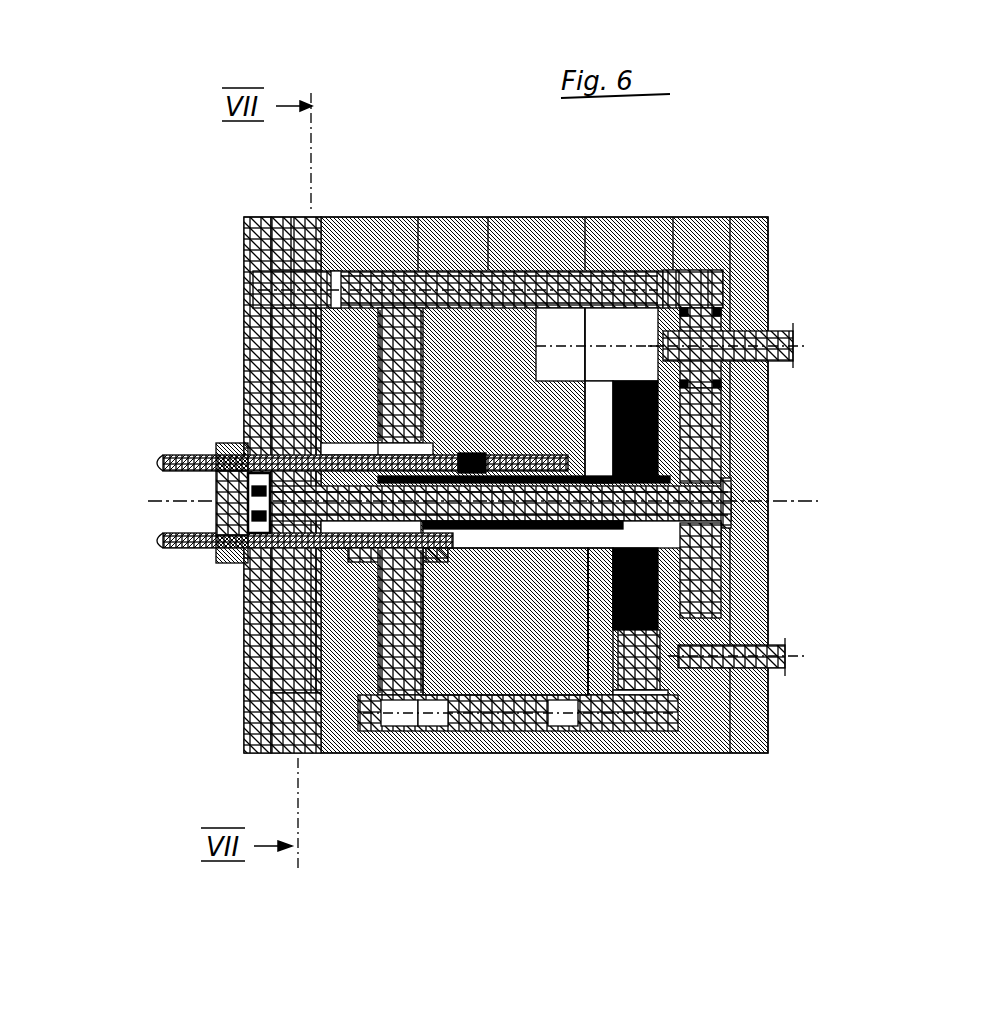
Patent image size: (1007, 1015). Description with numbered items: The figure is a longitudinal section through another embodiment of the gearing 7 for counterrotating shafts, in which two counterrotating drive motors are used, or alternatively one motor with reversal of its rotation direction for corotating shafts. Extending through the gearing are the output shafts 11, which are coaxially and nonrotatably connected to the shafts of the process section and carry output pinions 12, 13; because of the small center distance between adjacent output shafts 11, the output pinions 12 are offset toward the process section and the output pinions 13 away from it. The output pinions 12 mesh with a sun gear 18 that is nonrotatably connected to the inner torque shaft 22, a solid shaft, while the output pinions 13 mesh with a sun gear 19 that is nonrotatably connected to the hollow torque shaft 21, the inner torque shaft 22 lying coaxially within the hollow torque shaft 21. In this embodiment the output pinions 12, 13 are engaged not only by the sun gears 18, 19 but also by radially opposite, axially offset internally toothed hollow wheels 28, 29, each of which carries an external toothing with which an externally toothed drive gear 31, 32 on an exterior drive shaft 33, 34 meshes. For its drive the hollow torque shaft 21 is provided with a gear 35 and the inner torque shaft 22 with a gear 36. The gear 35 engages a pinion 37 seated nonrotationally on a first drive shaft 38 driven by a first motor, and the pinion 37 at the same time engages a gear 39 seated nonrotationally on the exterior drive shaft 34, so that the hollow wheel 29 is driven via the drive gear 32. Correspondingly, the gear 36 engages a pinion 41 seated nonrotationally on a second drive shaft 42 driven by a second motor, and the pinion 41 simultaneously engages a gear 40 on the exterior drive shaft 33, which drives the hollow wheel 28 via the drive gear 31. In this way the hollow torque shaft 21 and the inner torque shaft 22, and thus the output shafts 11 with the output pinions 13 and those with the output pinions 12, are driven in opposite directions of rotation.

The gearing 7 is at (118, 180).
The output shafts 11 is at (150, 493).
The output pinions 12 is at (258, 421).
The output pinions 13 is at (390, 584).
The sun gear 18 is at (292, 520).
The sun gear 19 is at (372, 421).
The hollow torque shaft 21 is at (548, 540).
The inner torque shaft 22 is at (640, 495).
The internally toothed hollow wheel 28 is at (275, 345).
The internally toothed hollow wheel 29 is at (398, 368).
The drive gear 31 is at (282, 232).
The drive gear 32 is at (410, 748).
The exterior drive shaft 33 is at (518, 272).
The exterior drive shaft 34 is at (455, 748).
The gear 35 is at (642, 412).
The gear 36 is at (737, 597).
The pinion 37 is at (680, 748).
The first drive shaft 38 is at (770, 645).
The gear 39 is at (629, 702).
The gear 40 is at (707, 257).
The pinion 41 is at (697, 305).
The second drive shaft 42 is at (782, 340).